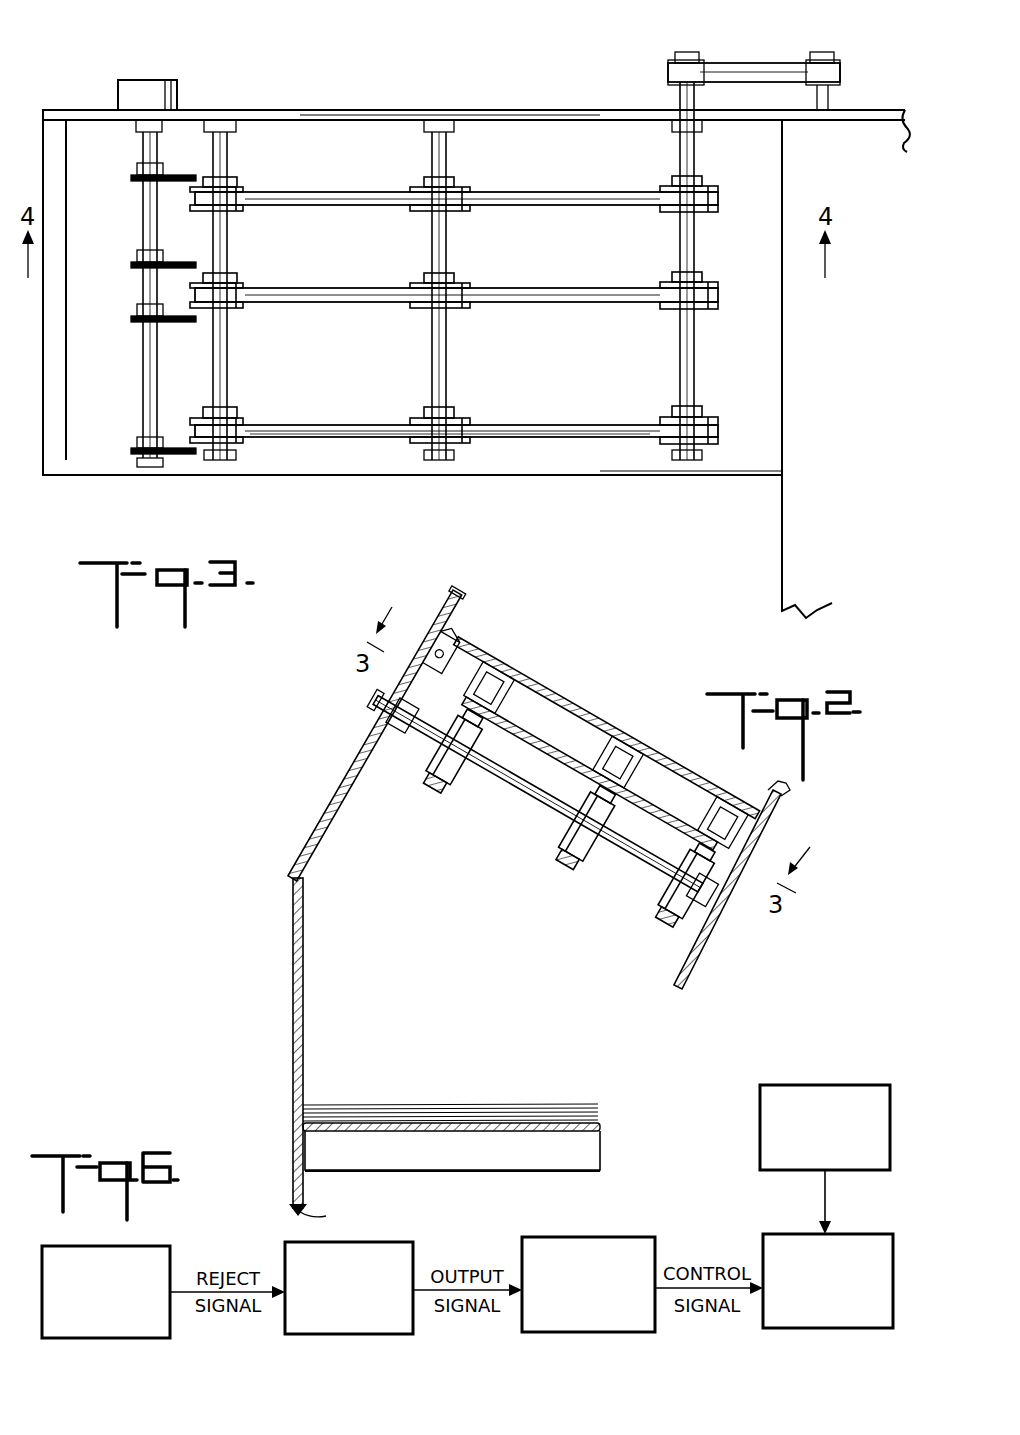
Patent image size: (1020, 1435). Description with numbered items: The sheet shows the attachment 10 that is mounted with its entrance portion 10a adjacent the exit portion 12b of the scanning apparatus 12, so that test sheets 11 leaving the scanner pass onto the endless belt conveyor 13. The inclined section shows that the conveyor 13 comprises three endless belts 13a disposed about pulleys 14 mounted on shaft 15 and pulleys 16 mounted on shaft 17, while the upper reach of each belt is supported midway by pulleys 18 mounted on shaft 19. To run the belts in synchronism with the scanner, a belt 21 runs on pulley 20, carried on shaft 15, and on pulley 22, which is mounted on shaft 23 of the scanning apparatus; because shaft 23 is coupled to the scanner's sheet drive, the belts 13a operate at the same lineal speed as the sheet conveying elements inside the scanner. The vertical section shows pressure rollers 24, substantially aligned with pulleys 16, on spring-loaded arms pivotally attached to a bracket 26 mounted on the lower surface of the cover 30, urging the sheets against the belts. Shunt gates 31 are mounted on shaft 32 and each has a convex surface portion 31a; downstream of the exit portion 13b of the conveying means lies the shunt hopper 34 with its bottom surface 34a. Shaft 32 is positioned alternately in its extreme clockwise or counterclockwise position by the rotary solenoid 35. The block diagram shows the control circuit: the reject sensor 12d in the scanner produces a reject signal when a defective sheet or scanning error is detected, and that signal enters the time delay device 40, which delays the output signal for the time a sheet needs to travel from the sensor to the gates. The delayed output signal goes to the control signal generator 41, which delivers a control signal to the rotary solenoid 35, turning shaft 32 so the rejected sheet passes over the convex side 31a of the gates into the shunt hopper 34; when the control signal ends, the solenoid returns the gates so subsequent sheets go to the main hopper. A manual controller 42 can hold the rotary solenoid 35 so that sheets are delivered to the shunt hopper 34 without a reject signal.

In FIG. 2, the attachment 10 is at (708, 978).
In FIG. 3, the entrance portion 10a is at (752, 147).
In FIG. 2, the test sheets 11 is at (657, 820).
In FIG. 3, the scanning apparatus 12 is at (872, 338).
In FIG. 3, the exit portion 12b is at (762, 470).
In FIG. 6, the reject sensor 12d is at (98, 1248).
In FIG. 3, the endless belt conveyor 13 is at (596, 450).
In FIG. 3, the endless belts 13a is at (578, 197).
In FIG. 2, the endless belts 13a is at (660, 923).
In FIG. 3, the exit portion of the conveying means 13b is at (275, 82).
In FIG. 3, the pulleys 14 is at (718, 183).
In FIG. 3, the shaft 15 is at (678, 247).
In FIG. 3, the pulleys 16 is at (242, 190).
In FIG. 2, the pulleys 16 is at (460, 793).
In FIG. 3, the shaft 17 is at (228, 350).
In FIG. 2, the shaft 17 is at (520, 787).
In FIG. 3, the pulleys 18 is at (452, 187).
In FIG. 3, the shaft 19 is at (430, 364).
In FIG. 3, the pulley 20 is at (670, 70).
In FIG. 3, the belt 21 is at (746, 63).
In FIG. 3, the pulley 22 is at (840, 60).
In FIG. 3, the shaft 23 is at (830, 93).
In FIG. 2, the pressure rollers 24 is at (497, 698).
In FIG. 2, the bracket 26 is at (470, 680).
In FIG. 2, the cover 30 is at (598, 718).
In FIG. 3, the shunt gates 31 is at (178, 182).
In FIG. 3, the convex surface portion 31a is at (183, 325).
In FIG. 3, the shaft 32 is at (150, 152).
In FIG. 2, the shunt hopper 34 is at (444, 1179).
In FIG. 2, the bottom surface 34a is at (520, 1150).
In FIG. 3, the rotary solenoid 35 is at (178, 80).
In FIG. 6, the rotary solenoid 35 is at (870, 1236).
In FIG. 6, the time delay device 40 is at (343, 1244).
In FIG. 6, the control signal generator 41 is at (625, 1239).
In FIG. 6, the manual controller 42 is at (862, 1087).